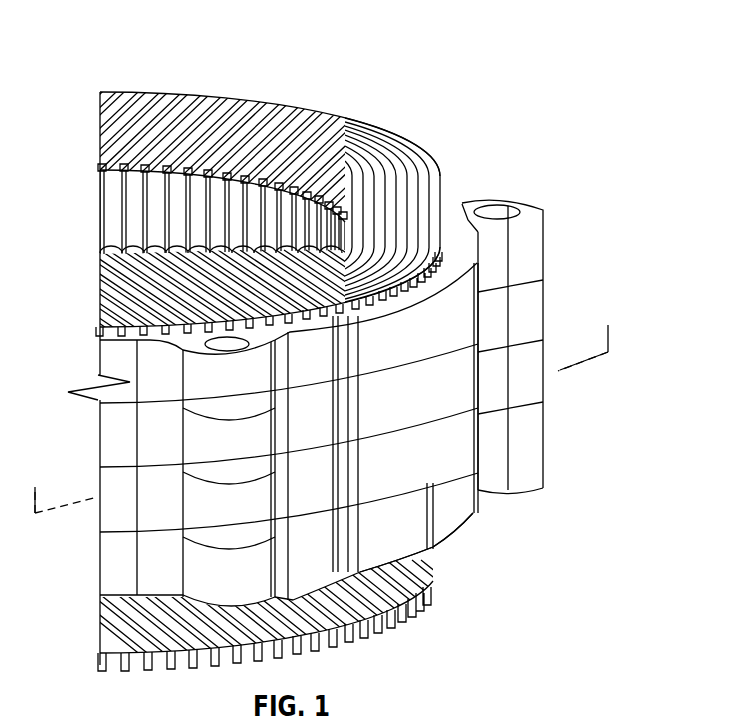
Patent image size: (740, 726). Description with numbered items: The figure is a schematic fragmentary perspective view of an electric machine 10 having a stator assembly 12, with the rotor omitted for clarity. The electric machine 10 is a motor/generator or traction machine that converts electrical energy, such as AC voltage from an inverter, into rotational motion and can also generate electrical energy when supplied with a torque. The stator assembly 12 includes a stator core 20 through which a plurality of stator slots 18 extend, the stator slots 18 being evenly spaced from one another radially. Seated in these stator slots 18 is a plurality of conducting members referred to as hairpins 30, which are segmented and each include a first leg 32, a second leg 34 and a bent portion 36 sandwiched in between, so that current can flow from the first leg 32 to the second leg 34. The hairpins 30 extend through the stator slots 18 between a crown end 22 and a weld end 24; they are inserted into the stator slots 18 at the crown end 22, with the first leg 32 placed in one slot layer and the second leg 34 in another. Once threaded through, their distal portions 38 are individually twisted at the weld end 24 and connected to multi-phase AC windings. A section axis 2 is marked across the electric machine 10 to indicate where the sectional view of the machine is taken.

The electric machine 10 is at (127, 83).
The stator assembly 12 is at (186, 90).
The stator slots 18 is at (232, 172).
The stator core 20 is at (562, 285).
The crown end 22 is at (526, 172).
The weld end 24 is at (477, 556).
The hairpins 30 is at (200, 240).
The first leg 32 is at (352, 160).
The second leg 34 is at (410, 163).
The bent portion 36 is at (380, 157).
The distal portions 38 is at (454, 619).
The axis 2- 2 is at (608, 318).